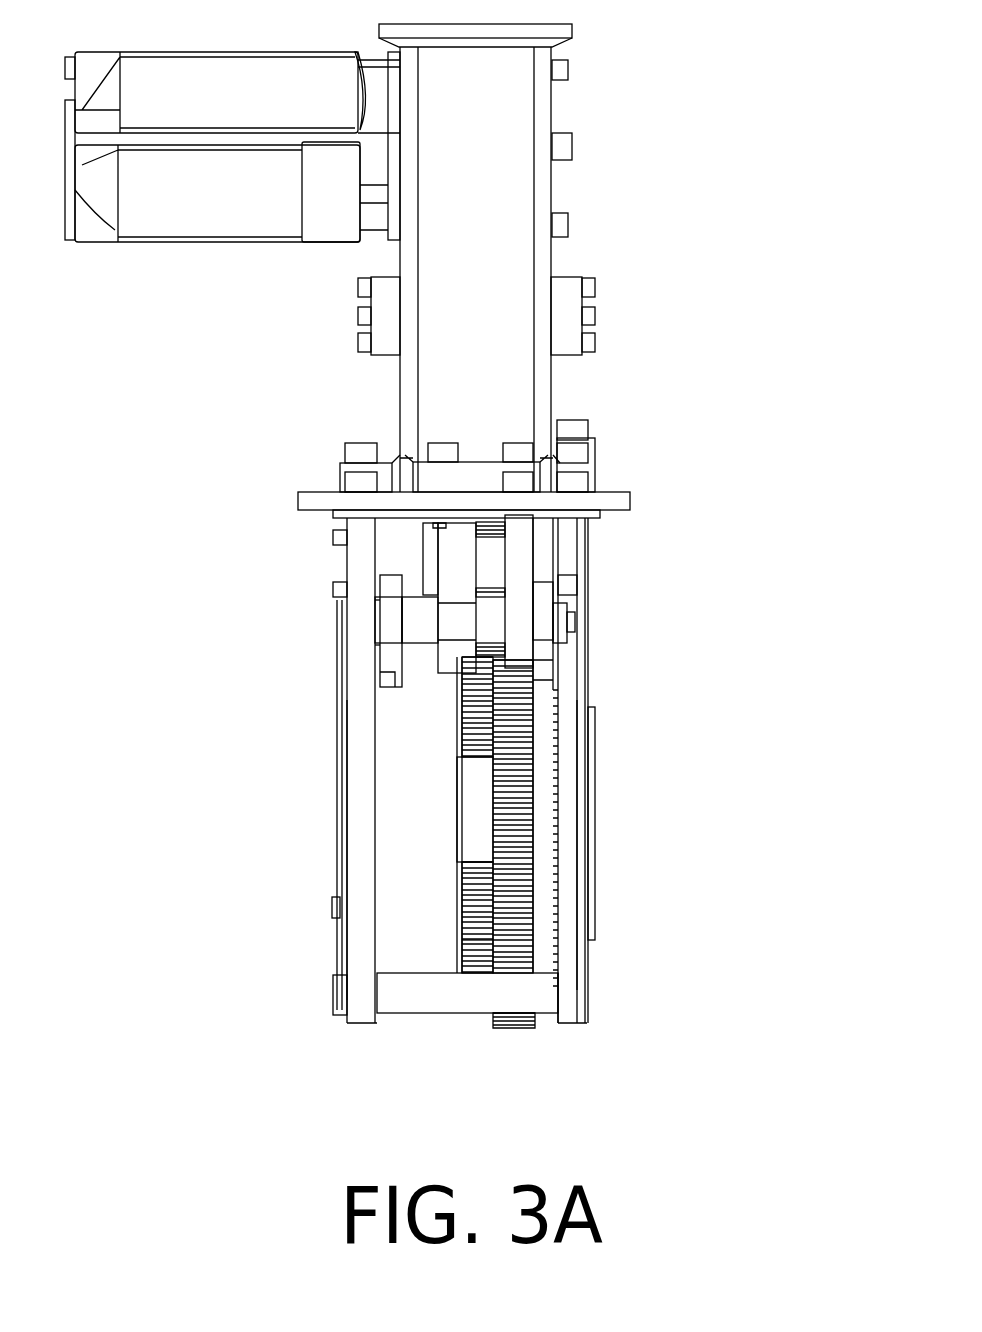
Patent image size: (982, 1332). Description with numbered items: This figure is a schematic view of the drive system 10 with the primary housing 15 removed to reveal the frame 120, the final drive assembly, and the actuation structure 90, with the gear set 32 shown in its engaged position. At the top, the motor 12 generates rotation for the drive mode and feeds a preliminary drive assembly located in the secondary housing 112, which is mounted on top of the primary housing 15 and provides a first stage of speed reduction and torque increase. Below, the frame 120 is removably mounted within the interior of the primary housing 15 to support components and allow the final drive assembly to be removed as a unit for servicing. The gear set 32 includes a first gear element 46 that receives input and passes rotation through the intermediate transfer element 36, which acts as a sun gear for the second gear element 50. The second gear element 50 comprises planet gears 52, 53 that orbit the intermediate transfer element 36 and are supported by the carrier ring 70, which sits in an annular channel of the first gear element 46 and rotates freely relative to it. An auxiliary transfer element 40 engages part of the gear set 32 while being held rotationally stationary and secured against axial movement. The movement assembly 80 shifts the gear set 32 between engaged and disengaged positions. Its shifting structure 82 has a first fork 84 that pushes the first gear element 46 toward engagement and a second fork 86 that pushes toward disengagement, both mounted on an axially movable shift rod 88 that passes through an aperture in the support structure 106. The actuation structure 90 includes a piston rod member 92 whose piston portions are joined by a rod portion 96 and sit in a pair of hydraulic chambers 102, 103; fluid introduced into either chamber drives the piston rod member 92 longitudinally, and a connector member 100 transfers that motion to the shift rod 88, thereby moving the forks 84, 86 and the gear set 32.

The drive system 10 is at (670, 188).
The motor 12 is at (210, 218).
The secondary housing 112 is at (470, 277).
The primary housing 15 is at (632, 500).
The piston rod member 92 is at (490, 568).
The rod portion 96 is at (432, 570).
The hydraulic chamber 103 is at (388, 561).
The hydraulic chamber 102 is at (547, 557).
The movement assembly 80 is at (378, 605).
The actuation structure 90 is at (562, 565).
The shift rod 88 is at (417, 622).
The connector member 100 is at (455, 592).
The second fork 86 is at (393, 633).
The support structure 106 is at (520, 633).
The shifting structure 82 is at (377, 645).
The first fork 84 is at (543, 663).
The frame 120 is at (360, 735).
The gear set 32 is at (538, 723).
The carrier ring 70 is at (473, 807).
The planet gear 52 is at (487, 738).
The first gear element 46 is at (535, 808).
The intermediate transfer element 36 is at (560, 828).
The auxiliary transfer element 40 is at (410, 917).
The second gear element 50 is at (500, 898).
The planet gear 53 is at (483, 942).